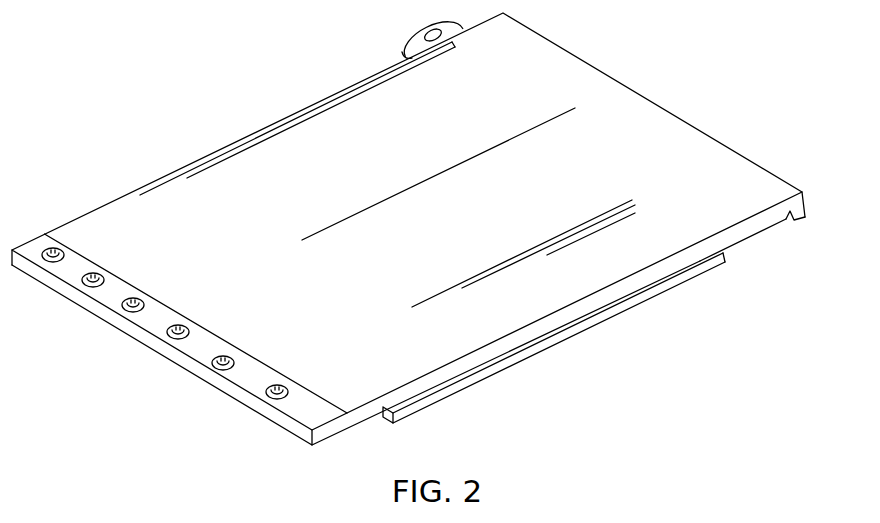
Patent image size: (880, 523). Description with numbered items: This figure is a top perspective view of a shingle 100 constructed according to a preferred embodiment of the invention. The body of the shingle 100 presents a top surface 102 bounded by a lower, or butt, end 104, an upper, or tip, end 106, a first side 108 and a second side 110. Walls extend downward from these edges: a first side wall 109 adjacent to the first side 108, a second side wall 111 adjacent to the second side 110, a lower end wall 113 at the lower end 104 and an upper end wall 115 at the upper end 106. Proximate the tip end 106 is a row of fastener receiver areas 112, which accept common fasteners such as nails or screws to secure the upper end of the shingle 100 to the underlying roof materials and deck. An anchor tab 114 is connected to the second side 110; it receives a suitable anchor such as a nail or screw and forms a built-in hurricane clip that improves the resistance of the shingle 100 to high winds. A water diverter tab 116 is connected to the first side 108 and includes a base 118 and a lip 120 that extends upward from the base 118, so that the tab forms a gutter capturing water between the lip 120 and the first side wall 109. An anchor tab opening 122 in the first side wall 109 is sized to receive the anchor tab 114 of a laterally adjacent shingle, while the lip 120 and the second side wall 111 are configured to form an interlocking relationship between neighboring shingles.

The shingle 100 is at (186, 69).
The top surface 102 is at (172, 222).
The lower end 104 is at (704, 96).
The upper end 106 is at (100, 336).
The first side 108 is at (599, 380).
The first side wall 109 is at (797, 212).
The second side 110 is at (276, 100).
The second side wall 111 is at (88, 210).
The fastener receiver areas 112 is at (43, 251).
The lower end wall 113 is at (720, 142).
The anchor tab 114 is at (408, 38).
The upper end wall 115 is at (207, 380).
The water diverter tab 116 is at (648, 312).
The base 118 is at (728, 257).
The lip 120 is at (682, 276).
The anchor tab opening 122 is at (764, 220).